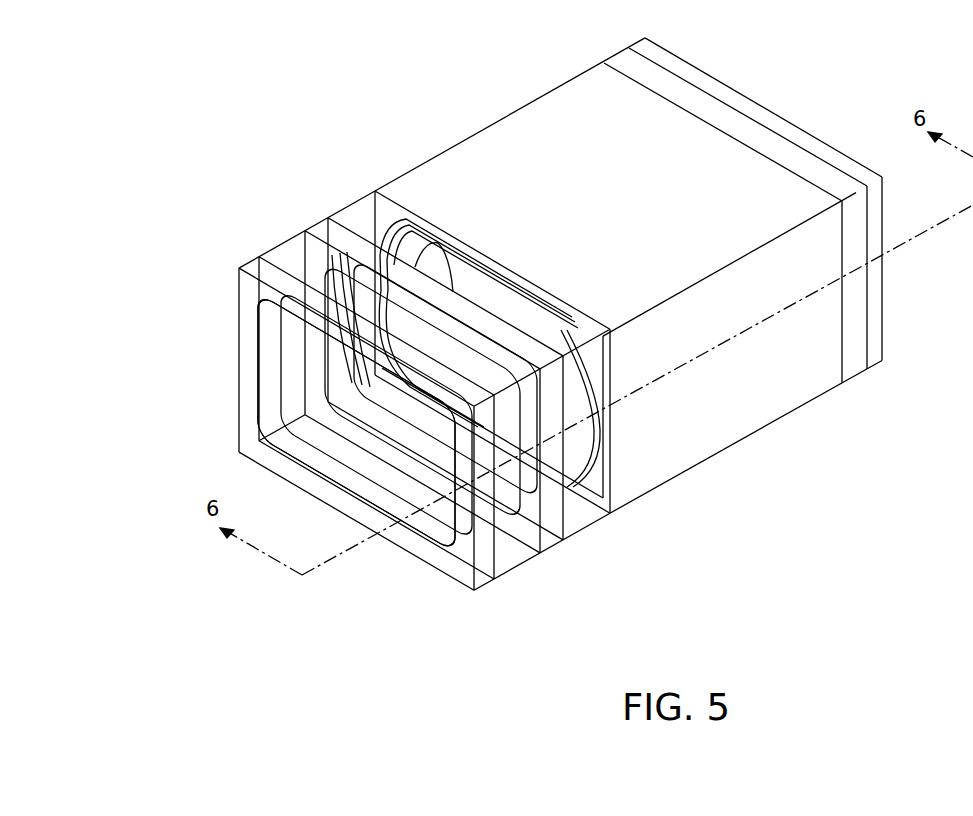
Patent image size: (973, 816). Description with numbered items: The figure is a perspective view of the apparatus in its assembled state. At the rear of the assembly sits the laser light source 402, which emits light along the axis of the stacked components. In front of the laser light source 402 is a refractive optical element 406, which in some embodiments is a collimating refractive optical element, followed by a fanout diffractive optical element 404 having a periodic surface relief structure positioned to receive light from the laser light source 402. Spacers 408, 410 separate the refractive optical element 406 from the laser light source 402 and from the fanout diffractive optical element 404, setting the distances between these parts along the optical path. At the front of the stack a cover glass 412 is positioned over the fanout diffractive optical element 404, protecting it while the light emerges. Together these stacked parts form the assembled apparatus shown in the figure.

The laser light source 402 is at (748, 95).
The fanout diffractive optical element 404 is at (278, 252).
The refractive optical element 406 is at (582, 520).
The spacer 408 is at (512, 122).
The spacer 410 is at (320, 232).
The cover glass 412 is at (238, 355).